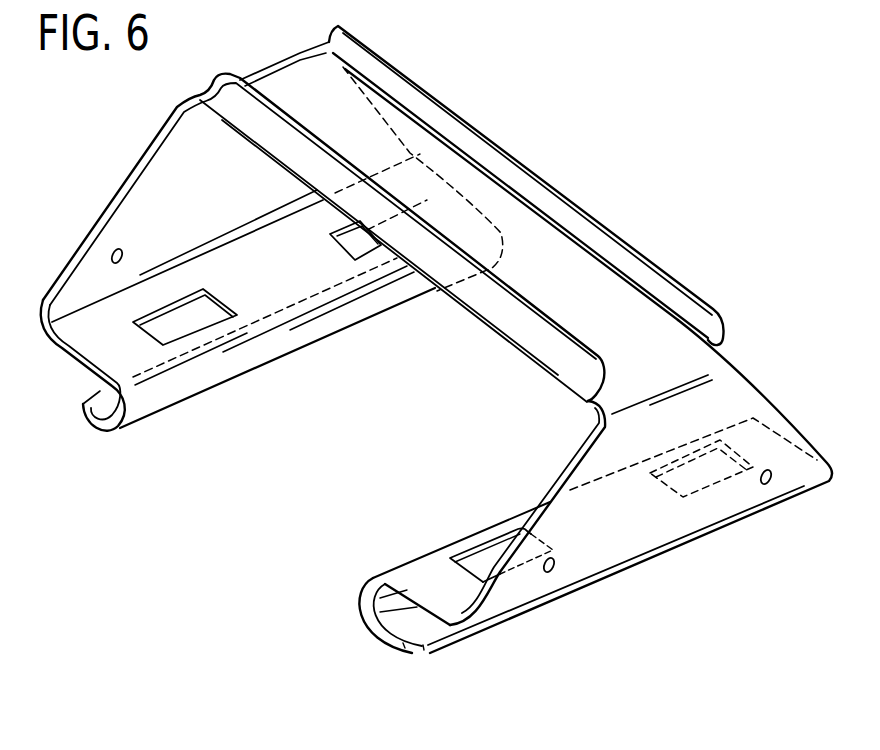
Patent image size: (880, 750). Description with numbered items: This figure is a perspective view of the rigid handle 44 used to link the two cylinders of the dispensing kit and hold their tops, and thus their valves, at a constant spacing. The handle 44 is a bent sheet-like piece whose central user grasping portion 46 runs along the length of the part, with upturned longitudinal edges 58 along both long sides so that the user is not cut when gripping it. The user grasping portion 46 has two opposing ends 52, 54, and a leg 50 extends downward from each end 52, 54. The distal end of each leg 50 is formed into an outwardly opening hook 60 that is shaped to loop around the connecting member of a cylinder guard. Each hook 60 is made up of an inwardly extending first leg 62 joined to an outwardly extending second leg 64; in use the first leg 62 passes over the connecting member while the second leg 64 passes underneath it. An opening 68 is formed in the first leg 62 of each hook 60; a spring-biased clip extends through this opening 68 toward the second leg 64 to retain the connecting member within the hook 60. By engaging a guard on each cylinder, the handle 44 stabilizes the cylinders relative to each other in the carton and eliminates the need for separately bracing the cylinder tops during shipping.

The handle 44 is at (569, 131).
The user grasping portion 46 is at (620, 324).
The leg 50 is at (108, 204).
The end 52 is at (703, 375).
The end 54 is at (277, 62).
The upturned longitudinal edges 58 is at (592, 217).
The hook 60 is at (263, 391).
The first leg 62 is at (422, 614).
The second leg 64 is at (385, 637).
The opening 68 is at (331, 245).